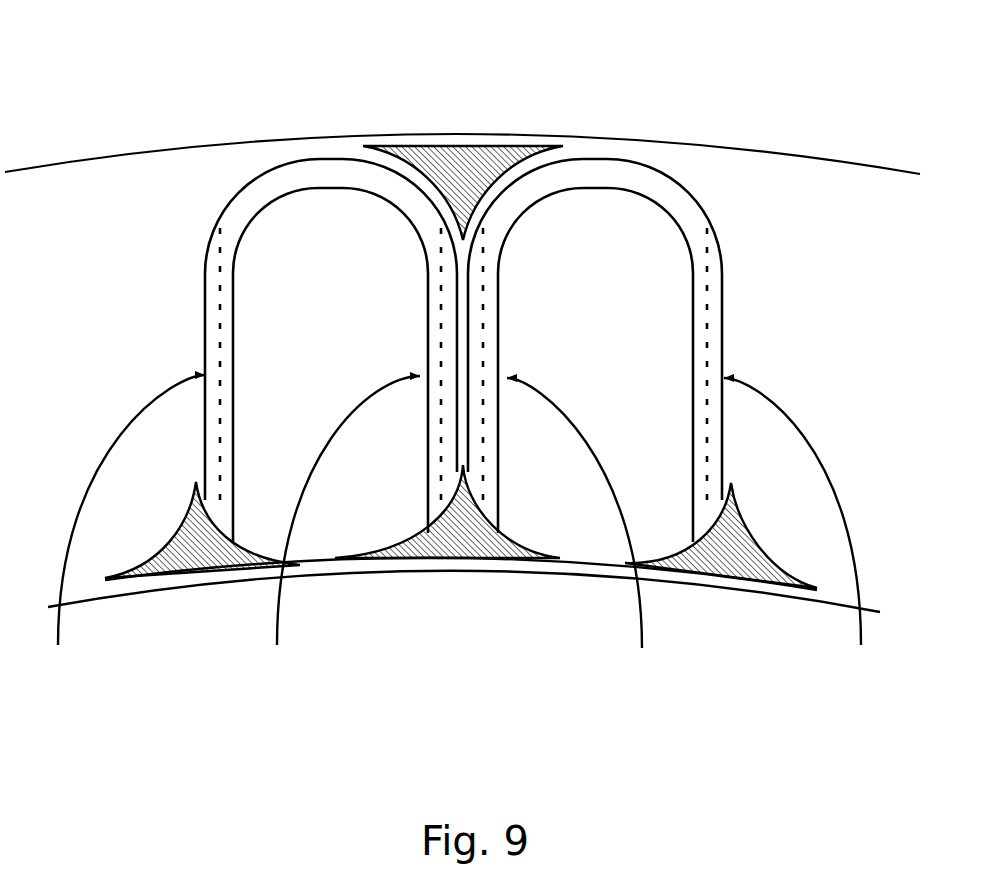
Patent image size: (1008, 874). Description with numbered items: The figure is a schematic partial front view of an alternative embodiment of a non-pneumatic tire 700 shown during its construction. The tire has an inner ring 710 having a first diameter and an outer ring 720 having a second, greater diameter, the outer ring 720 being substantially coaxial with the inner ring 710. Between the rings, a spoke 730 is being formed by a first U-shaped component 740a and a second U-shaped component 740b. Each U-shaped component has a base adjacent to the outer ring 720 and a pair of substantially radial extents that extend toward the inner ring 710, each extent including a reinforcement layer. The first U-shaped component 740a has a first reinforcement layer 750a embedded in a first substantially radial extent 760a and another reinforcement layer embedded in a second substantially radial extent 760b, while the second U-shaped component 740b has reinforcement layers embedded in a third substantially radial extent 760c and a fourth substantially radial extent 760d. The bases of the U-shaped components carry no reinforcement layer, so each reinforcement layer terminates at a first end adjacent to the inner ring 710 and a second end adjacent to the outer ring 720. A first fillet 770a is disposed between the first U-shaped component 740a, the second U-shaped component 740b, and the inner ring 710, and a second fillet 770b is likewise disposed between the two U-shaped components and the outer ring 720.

The non-pneumatic tire 700 is at (670, 96).
The inner ring 710 is at (740, 608).
The outer ring 720 is at (835, 146).
The spoke 730 is at (478, 119).
The first U-shaped component 740a is at (304, 144).
The second U-shaped component 740b is at (592, 143).
The first reinforcement layer 750a is at (206, 253).
The first substantially radial extent 760a is at (117, 533).
The second substantially radial extent 760b is at (335, 533).
The third substantially radial extent 760c is at (593, 534).
The fourth substantially radial extent 760d is at (809, 534).
The first fillet 770a is at (452, 569).
The second fillet 770b is at (423, 133).